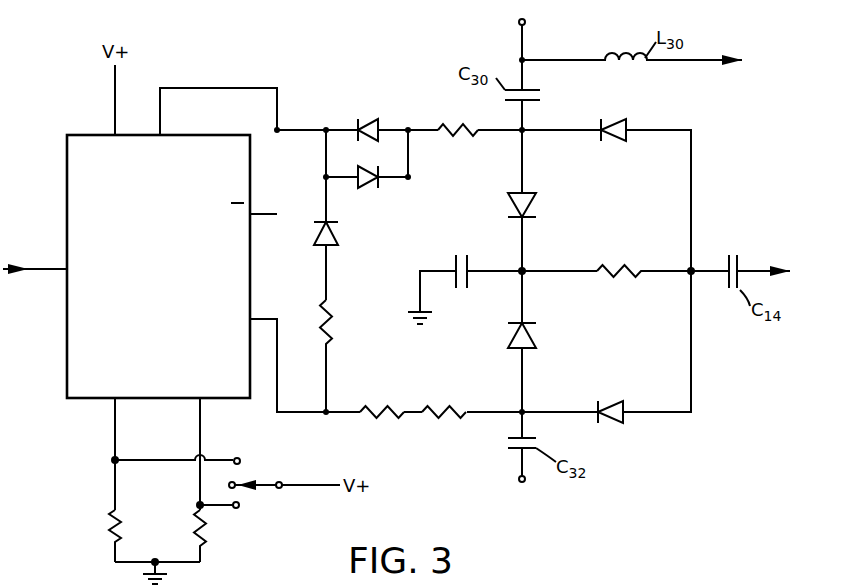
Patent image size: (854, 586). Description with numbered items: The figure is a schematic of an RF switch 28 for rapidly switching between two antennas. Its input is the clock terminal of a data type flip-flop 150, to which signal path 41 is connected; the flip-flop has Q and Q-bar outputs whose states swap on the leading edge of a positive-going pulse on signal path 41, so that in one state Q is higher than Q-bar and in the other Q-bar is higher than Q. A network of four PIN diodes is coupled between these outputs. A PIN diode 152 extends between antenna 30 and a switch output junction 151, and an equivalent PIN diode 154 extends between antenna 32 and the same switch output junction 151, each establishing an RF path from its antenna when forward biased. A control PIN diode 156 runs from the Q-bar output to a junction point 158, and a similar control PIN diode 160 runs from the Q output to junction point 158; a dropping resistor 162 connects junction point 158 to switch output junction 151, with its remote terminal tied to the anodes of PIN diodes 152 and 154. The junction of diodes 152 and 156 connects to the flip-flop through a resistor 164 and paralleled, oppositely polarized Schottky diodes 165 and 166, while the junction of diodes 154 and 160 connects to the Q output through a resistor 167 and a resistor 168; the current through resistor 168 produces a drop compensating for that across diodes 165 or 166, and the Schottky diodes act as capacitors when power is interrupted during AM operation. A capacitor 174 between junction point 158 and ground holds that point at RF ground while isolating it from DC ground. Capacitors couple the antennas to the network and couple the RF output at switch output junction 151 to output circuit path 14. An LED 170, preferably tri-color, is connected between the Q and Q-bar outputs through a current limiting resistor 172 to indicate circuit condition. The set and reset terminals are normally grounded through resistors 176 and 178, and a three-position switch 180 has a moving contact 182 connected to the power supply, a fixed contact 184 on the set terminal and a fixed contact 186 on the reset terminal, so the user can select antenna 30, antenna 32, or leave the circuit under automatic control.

The output circuit path 14 is at (745, 269).
The RF switch 28 is at (388, 60).
The antenna 30 is at (519, 22).
The antenna 32 is at (519, 480).
The signal path 41 is at (62, 272).
The data type flip-flop 150 is at (250, 282).
The switch output junction 151 is at (688, 274).
The PIN diode 152 is at (624, 126).
The PIN diode 154 is at (622, 406).
The control PIN diode 156 is at (534, 208).
The junction point 158 is at (524, 270).
The control PIN diode 160 is at (534, 338).
The dropping resistor 162 is at (620, 266).
The resistor 164 is at (466, 136).
The diode 165 is at (370, 119).
The diode 166 is at (364, 186).
The resistor 167 is at (452, 408).
The resistor 168 is at (382, 408).
The LED 170 is at (338, 234).
The current limiting resistor 172 is at (334, 312).
The capacitor 174 is at (468, 262).
The resistor 176 is at (120, 518).
The resistor 178 is at (206, 533).
The switch 180 is at (300, 494).
The moving contact 182 is at (265, 481).
The fixed contact 184 is at (240, 459).
The fixed contact 186 is at (240, 508).